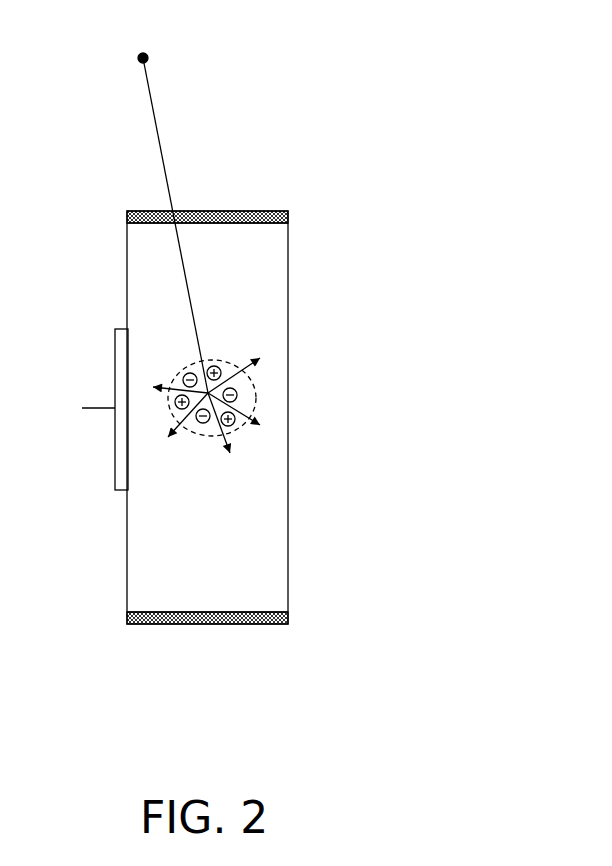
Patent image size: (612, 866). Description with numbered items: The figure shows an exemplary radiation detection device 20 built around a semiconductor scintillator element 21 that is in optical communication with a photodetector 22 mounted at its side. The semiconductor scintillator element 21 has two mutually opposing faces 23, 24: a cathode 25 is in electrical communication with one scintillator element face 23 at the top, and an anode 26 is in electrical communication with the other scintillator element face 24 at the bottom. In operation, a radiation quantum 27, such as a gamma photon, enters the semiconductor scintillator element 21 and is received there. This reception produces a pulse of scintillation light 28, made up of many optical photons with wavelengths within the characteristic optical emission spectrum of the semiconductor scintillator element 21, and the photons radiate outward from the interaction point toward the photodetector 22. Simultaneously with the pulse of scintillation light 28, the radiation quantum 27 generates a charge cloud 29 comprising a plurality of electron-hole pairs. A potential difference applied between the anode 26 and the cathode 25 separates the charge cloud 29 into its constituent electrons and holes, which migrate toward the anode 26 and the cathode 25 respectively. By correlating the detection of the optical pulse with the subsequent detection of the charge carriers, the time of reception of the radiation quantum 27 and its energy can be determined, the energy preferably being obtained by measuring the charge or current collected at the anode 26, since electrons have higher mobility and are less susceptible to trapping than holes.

The radiation detection device 20 is at (363, 182).
The semiconductor scintillator element 21 is at (134, 265).
The photodetector 22 is at (120, 350).
The scintillator element face 23 is at (255, 223).
The scintillator element face 24 is at (157, 612).
The cathode 25 is at (204, 212).
The anode 26 is at (203, 624).
The radiation quantum 27 is at (136, 58).
The pulse of scintillation light 28 is at (240, 448).
The charge cloud 29 is at (257, 397).